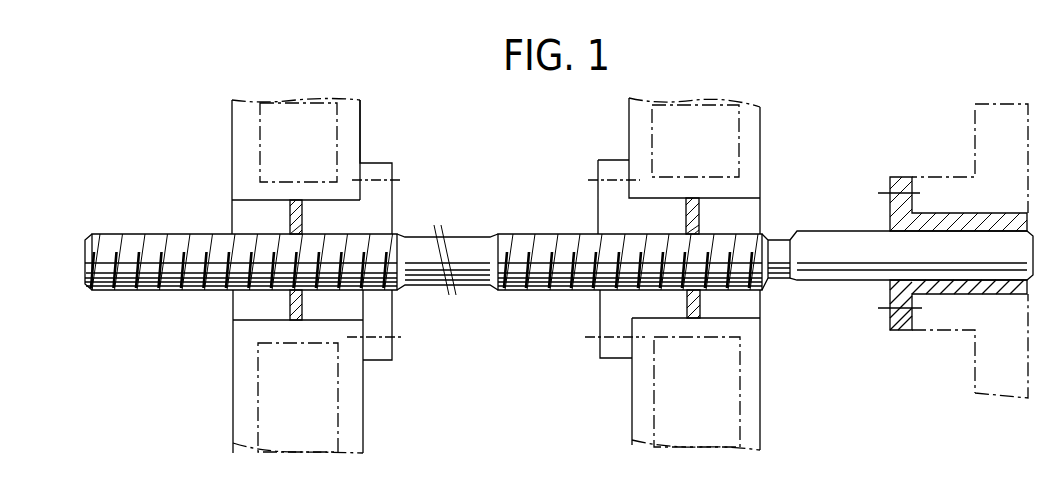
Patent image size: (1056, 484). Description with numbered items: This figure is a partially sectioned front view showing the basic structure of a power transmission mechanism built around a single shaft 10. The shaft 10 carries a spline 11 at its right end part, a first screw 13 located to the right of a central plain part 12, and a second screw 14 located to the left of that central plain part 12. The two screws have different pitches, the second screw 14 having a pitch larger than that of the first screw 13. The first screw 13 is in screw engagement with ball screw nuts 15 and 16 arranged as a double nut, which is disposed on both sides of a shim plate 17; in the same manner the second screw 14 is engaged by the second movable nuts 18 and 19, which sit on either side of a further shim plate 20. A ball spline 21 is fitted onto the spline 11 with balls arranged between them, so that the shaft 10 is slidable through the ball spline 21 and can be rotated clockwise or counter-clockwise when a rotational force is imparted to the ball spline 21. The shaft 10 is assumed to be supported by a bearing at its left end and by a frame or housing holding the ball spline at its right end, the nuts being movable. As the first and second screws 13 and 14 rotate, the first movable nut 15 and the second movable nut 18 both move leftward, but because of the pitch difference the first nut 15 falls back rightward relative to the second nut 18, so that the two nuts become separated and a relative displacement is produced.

The shaft 10 is at (559, 269).
The spline 11 is at (834, 230).
The central plain part 12 is at (468, 236).
The first screw 13 is at (548, 291).
The second screw 14 is at (180, 291).
The ball screw nut 15 is at (662, 302).
The ball screw nut 16 is at (735, 297).
The shim plate 17 is at (692, 198).
The ball screw nut 18 is at (250, 304).
The ball screw nut 19 is at (340, 303).
The shim plate 20 is at (296, 200).
The ball spline 21 is at (998, 213).